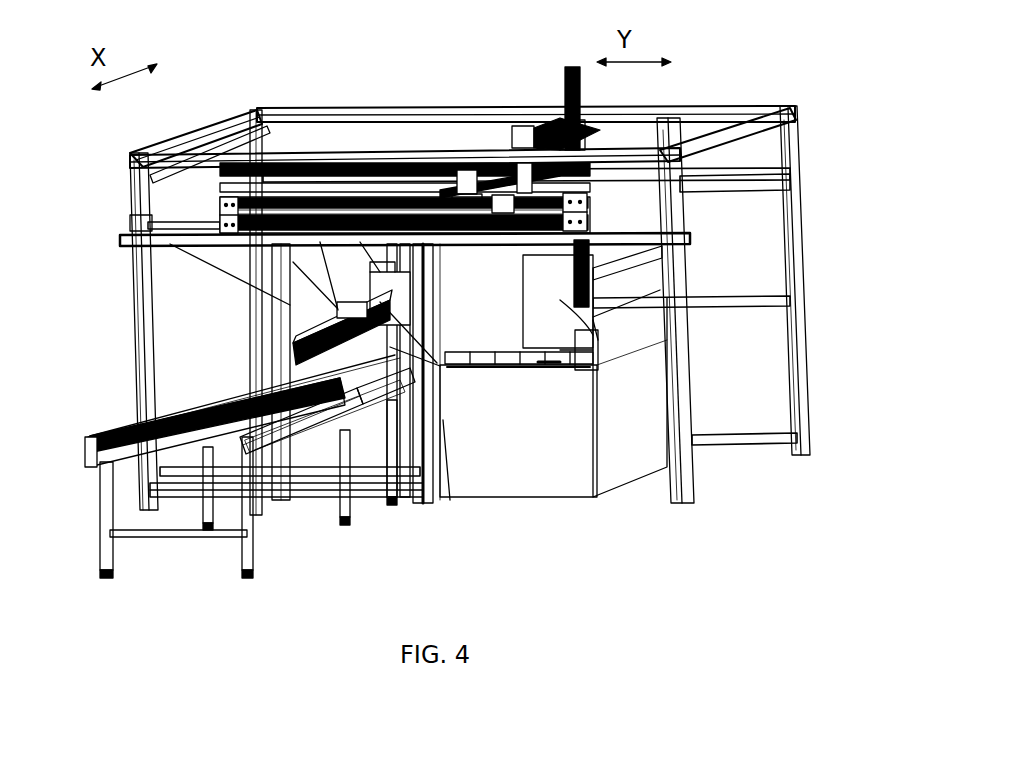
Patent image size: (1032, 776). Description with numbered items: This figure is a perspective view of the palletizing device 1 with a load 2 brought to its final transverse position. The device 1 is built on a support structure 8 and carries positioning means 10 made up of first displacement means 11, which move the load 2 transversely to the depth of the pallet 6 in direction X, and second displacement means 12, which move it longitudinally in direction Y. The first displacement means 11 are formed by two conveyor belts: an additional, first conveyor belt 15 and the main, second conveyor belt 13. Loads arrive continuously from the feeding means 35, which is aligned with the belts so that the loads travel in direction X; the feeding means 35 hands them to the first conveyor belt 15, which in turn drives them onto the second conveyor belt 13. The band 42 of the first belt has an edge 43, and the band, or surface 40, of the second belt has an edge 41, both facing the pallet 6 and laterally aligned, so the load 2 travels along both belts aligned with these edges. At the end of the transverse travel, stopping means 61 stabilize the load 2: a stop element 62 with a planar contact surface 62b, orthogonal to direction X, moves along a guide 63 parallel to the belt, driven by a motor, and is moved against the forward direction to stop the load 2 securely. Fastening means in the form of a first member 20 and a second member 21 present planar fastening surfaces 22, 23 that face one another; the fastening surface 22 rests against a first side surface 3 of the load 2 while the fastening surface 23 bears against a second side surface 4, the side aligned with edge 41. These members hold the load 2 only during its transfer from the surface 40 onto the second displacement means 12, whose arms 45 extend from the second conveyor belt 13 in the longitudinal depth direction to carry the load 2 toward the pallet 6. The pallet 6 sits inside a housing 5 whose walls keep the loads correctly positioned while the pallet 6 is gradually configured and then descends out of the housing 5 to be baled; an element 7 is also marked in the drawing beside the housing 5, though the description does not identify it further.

The palletizing device 1 is at (737, 500).
The load 2 is at (562, 326).
The first side surface 3 is at (496, 175).
The second side surface 4 is at (607, 372).
The housing 5 is at (598, 320).
The pallet 6 is at (560, 350).
The housing 7 is at (650, 359).
The support structure 8 is at (130, 172).
The positioning means 10 is at (373, 162).
The first displacement means 11 is at (266, 333).
The second displacement means 12 is at (477, 168).
The conveyor belt 13 is at (174, 138).
The additional conveyor belt 15 is at (158, 407).
The first member 20 is at (524, 128).
The second member 21 is at (583, 98).
The fastening surface 22 is at (681, 293).
The fastening surface 23 is at (681, 240).
The feeding means 35 is at (298, 502).
The surface 40 is at (445, 422).
The edge 41 is at (447, 367).
The band 42 is at (373, 493).
The edge 43 is at (427, 507).
The arms 45 is at (538, 362).
The stopping means 61 is at (228, 197).
The stop element 62 is at (300, 173).
The contact surface 62b is at (424, 160).
The guide 63 is at (132, 220).